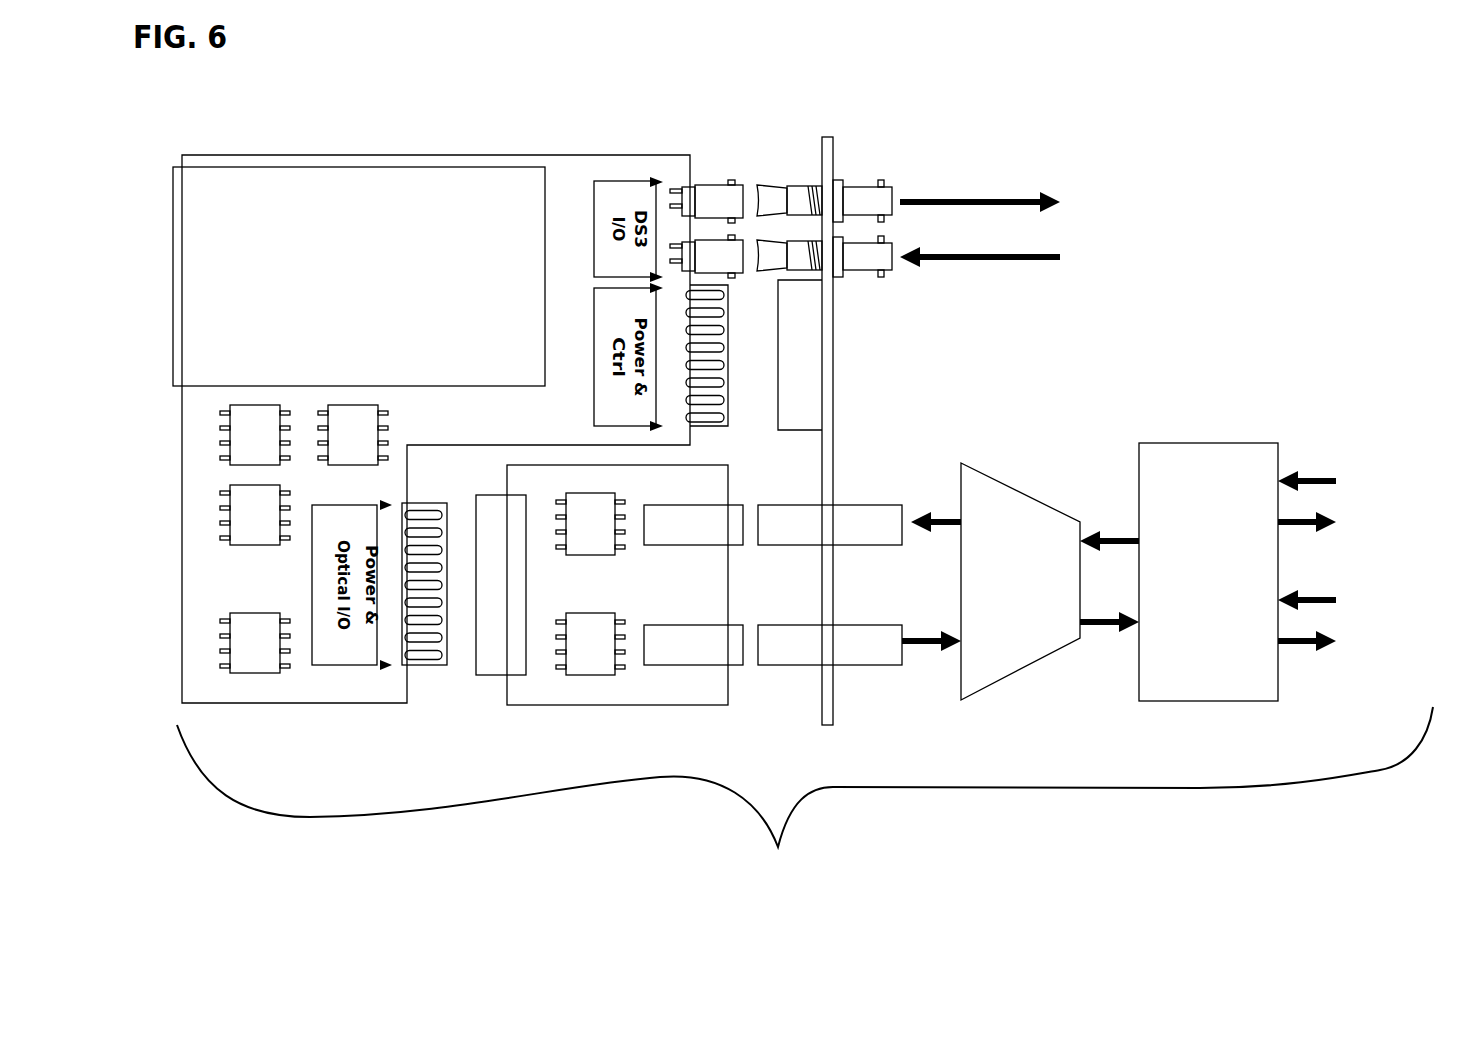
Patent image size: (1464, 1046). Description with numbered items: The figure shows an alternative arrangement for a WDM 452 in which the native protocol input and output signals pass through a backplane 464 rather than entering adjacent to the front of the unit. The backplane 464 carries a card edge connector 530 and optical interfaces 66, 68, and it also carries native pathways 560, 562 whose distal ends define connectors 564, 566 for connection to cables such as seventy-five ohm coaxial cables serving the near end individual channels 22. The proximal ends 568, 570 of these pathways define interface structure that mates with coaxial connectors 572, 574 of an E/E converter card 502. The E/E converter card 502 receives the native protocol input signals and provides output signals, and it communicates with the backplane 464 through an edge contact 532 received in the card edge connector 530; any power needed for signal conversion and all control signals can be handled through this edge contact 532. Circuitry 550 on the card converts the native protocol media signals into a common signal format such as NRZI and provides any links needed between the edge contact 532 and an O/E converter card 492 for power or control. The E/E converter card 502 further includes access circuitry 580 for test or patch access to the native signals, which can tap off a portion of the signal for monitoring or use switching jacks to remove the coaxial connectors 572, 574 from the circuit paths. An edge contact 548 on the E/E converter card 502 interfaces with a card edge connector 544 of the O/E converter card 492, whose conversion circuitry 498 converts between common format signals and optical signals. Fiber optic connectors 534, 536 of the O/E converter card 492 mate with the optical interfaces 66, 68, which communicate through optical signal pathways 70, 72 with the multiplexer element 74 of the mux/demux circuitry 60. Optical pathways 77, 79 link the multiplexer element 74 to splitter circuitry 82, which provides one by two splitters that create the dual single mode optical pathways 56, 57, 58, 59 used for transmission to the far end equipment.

The near end individual channels 22 is at (1202, 193).
The optical pathway 56 is at (1289, 527).
The optical pathway 57 is at (1296, 643).
The optical pathway 58 is at (1314, 474).
The optical pathway 59 is at (1334, 606).
The mux/demux circuitry 60 is at (1169, 530).
The optical interface 66 is at (857, 505).
The optical interface 68 is at (866, 667).
The optical signal pathway 70 is at (927, 643).
The optical signal pathway 72 is at (938, 518).
The multiplexer element 74 is at (1070, 513).
The optical pathway 77 is at (1107, 624).
The optical pathway 79 is at (1118, 531).
The splitter circuitry 82 is at (1216, 441).
The WDM 452 is at (805, 792).
The backplane 464 is at (833, 143).
The O/E converter card 492 is at (642, 705).
The conversion circuitry 498 is at (598, 675).
The E/E converter card 502 is at (310, 705).
The card edge connector 530 is at (798, 431).
The edge contact 532 is at (730, 405).
The fiber optic connector 534 is at (737, 545).
The fiber optic connector 536 is at (733, 665).
The card edge connector 544 is at (487, 675).
The edge contact 548 is at (420, 667).
The circuitry 550 is at (252, 673).
The native pathway 560 is at (865, 187).
The native pathway 562 is at (855, 275).
The connector 564 is at (887, 185).
The connector 566 is at (887, 273).
The proximal end 568 is at (790, 187).
The proximal end 570 is at (770, 271).
The coaxial connector 572 is at (722, 185).
The coaxial connector 574 is at (710, 240).
The access circuitry 580 is at (172, 207).